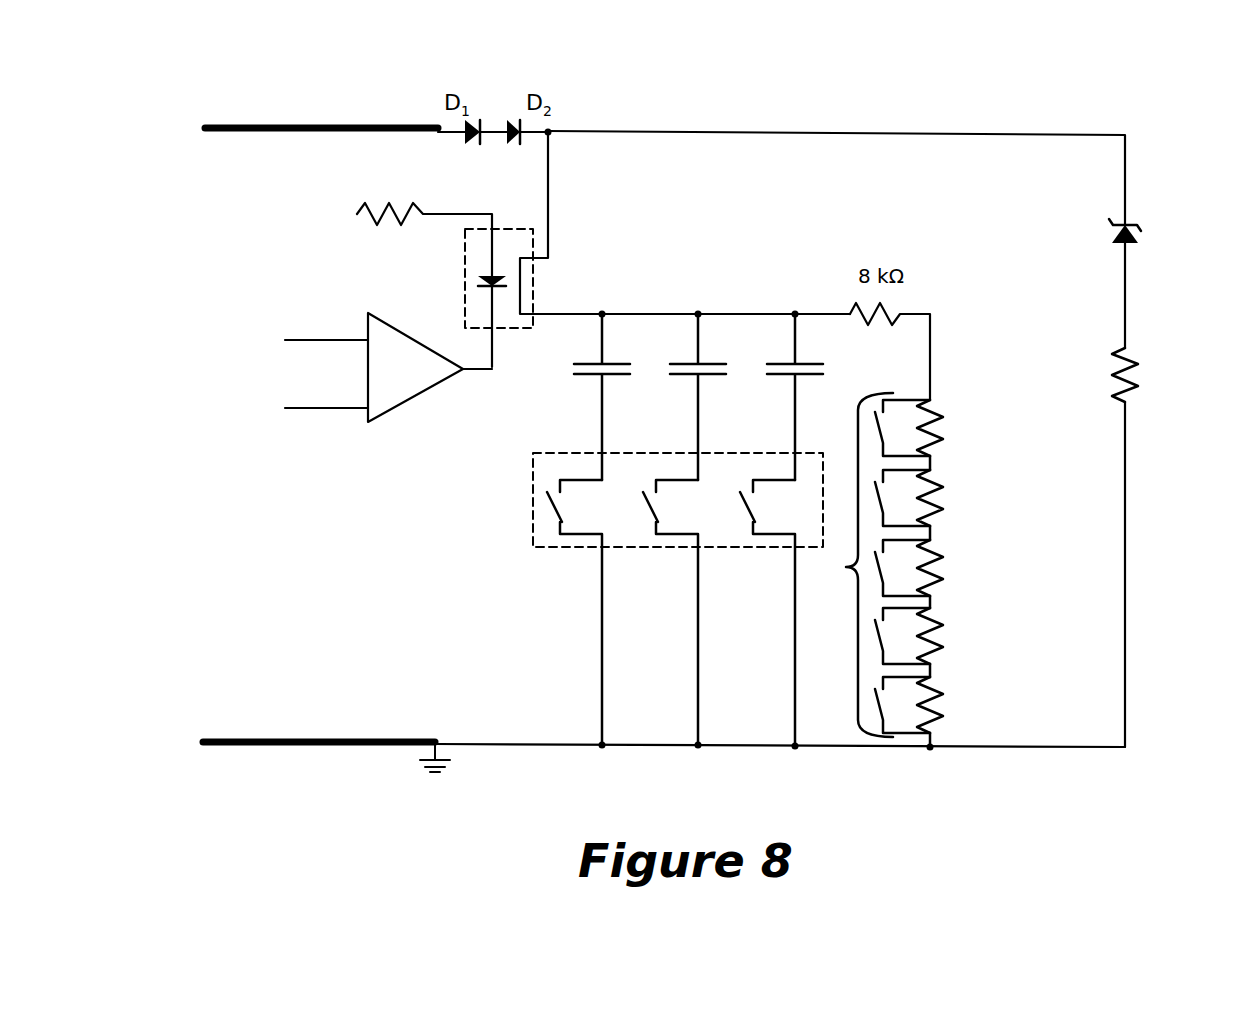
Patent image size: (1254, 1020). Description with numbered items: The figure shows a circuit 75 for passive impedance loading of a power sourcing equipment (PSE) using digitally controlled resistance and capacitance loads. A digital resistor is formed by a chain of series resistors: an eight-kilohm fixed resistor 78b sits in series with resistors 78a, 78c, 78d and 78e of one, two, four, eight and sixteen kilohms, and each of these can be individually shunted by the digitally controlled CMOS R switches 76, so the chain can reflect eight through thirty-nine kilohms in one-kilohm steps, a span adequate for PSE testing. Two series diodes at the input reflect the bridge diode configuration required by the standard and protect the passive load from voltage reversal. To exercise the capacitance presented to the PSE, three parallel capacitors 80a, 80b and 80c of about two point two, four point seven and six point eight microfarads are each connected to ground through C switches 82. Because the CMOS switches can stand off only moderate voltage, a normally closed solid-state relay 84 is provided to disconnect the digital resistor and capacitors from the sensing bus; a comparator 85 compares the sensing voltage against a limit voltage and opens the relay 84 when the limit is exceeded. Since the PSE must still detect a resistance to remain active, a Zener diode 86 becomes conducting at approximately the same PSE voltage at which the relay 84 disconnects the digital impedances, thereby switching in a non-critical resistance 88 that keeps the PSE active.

The circuit 75 is at (212, 86).
The R switches 76 is at (904, 592).
The resistor 78a is at (932, 400).
The fixed resistor 78b is at (937, 483).
The resistor 78c is at (938, 560).
The resistor 78d is at (938, 632).
The resistor 78e is at (938, 700).
The capacitor 80a is at (602, 356).
The capacitor 80b is at (698, 358).
The capacitor 80c is at (795, 358).
The C switches 82 is at (530, 498).
The solid-state relay 84 is at (460, 242).
The comparator 85 is at (370, 422).
The Zener diode 86 is at (1128, 225).
The resistance R_MPS 88 is at (1128, 355).